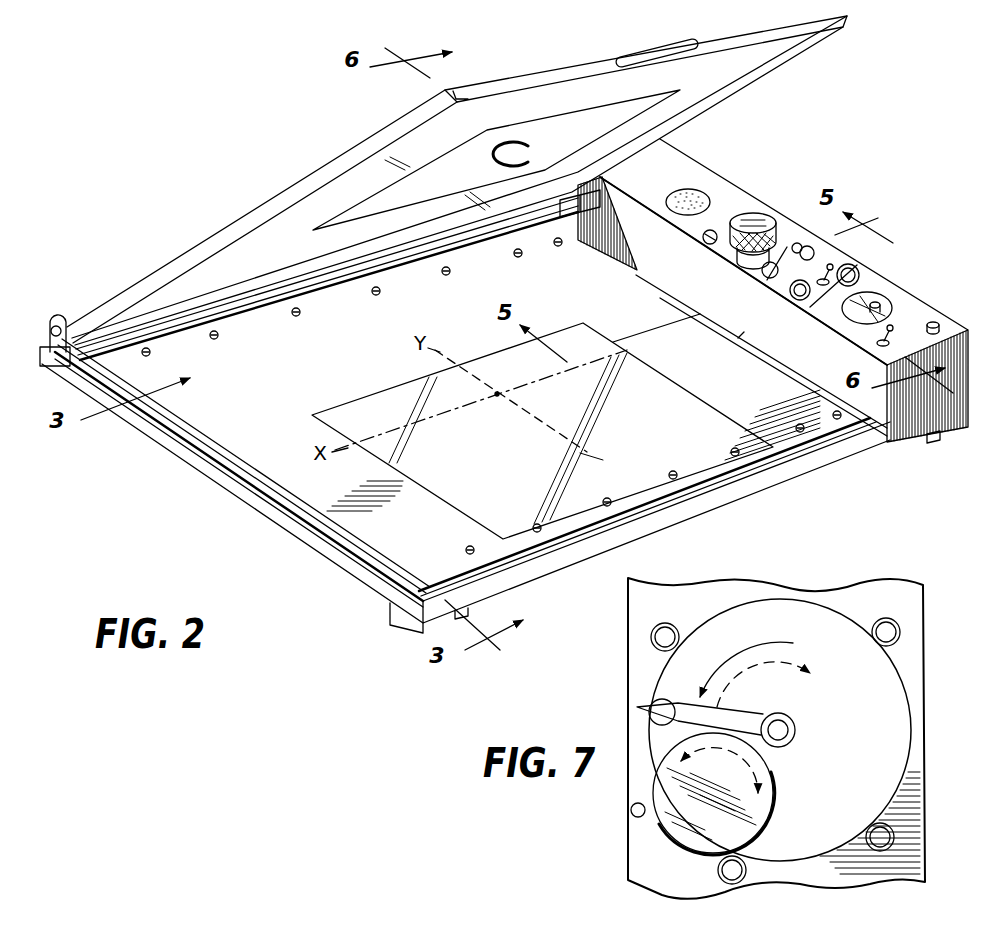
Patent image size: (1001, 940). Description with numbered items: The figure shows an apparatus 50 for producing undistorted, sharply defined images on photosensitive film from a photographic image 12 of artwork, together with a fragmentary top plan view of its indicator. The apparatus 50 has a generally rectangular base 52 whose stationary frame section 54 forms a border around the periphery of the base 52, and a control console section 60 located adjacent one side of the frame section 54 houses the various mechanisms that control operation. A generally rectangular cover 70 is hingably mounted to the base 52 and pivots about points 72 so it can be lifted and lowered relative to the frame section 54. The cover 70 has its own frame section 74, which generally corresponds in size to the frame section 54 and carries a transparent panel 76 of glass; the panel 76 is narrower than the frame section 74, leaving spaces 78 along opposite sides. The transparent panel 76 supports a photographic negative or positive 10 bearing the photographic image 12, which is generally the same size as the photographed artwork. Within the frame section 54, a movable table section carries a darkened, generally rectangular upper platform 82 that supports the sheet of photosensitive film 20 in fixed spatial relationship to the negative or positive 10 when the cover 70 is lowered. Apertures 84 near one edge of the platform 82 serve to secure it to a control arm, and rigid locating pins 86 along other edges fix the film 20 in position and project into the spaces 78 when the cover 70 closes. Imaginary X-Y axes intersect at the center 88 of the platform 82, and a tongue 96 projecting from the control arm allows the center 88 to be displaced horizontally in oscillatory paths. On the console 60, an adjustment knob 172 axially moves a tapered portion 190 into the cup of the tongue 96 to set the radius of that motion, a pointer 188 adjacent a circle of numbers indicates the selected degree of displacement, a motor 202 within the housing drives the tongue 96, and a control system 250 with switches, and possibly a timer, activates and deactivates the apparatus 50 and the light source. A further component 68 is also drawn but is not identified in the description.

In FIG. 2, the photographic negative or positive 10 is at (563, 110).
In FIG. 2, the photographic image 12 is at (518, 132).
In FIG. 2, the sheet of photosensitive film 20 is at (482, 500).
In FIG. 2, the apparatus 50 is at (119, 276).
In FIG. 2, the base 52 is at (323, 547).
In FIG. 2, the stationary frame section 54 is at (252, 500).
In FIG. 2, the control console section 60 is at (728, 200).
In FIG. 7, the control console section 60 is at (627, 660).
In FIG. 2, the hinge bracket 68 is at (506, 213).
In FIG. 2, the cover 70 is at (212, 231).
In FIG. 2, the points 72 is at (56, 318).
In FIG. 2, the frame section 74 is at (335, 172).
In FIG. 2, the transparent panel 76 is at (293, 232).
In FIG. 2, the spaces 78 is at (757, 46).
In FIG. 2, the upper platform 82 is at (327, 297).
In FIG. 2, the apertures 84 is at (560, 247).
In FIG. 2, the locating pins 86 is at (296, 320).
In FIG. 2, the center 88 is at (497, 390).
In FIG. 2, the tongue 96 is at (707, 322).
In FIG. 2, the adjustment knob 172 is at (757, 213).
In FIG. 7, the adjustment knob 172 is at (668, 833).
In FIG. 2, the pointer 188 is at (735, 258).
In FIG. 7, the pointer 188 is at (743, 723).
In FIG. 2, the tapered portion 190 is at (781, 243).
In FIG. 7, the tapered portion 190 is at (838, 612).
In FIG. 2, the motor 202 is at (695, 187).
In FIG. 2, the control system 250 is at (894, 302).